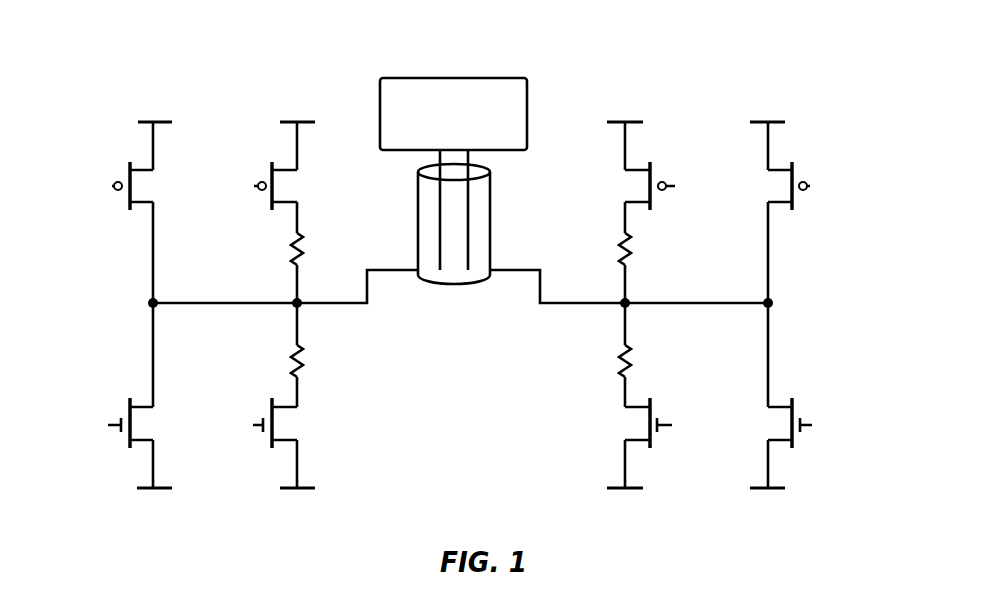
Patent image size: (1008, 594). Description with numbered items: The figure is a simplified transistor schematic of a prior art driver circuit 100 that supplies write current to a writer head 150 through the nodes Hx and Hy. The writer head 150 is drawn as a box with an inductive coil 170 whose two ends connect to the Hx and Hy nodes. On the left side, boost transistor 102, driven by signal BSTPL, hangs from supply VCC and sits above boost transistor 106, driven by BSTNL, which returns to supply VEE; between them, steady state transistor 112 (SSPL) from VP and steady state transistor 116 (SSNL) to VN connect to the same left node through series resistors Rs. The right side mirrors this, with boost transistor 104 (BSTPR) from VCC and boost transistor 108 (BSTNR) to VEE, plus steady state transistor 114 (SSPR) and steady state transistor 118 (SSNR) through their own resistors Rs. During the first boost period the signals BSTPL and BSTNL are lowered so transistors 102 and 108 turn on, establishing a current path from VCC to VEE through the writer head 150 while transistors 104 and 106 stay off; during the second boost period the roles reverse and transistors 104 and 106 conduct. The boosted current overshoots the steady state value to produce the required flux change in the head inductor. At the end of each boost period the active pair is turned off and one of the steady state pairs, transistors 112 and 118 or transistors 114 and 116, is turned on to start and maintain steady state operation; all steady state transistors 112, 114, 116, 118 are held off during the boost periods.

The driver circuit 100 is at (546, 67).
The boost transistor 102 is at (142, 186).
The boost transistor 104 is at (782, 186).
The boost transistor 106 is at (142, 422).
The boost transistor 108 is at (782, 422).
The steady state transistor 112 is at (283, 186).
The steady state transistor 114 is at (633, 186).
The steady state transistor 116 is at (283, 423).
The steady state transistor 118 is at (633, 422).
The writer head 150 is at (452, 78).
The writer head coil 170 is at (452, 285).